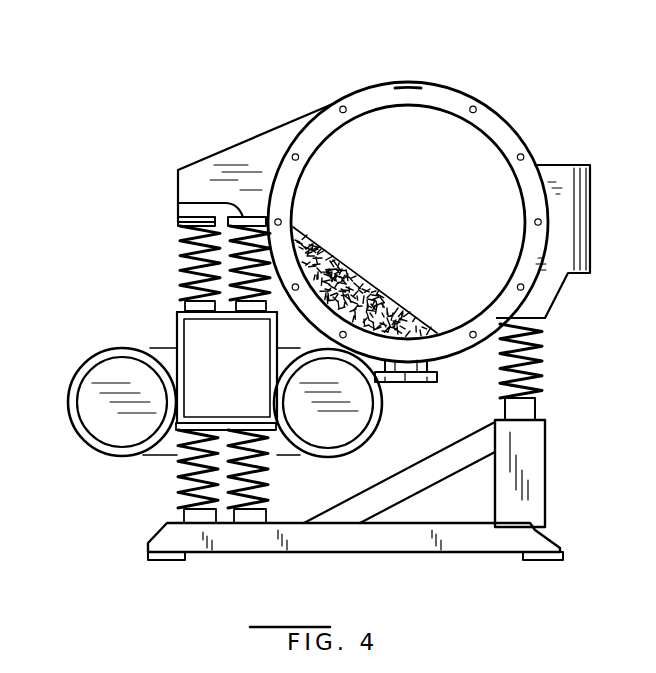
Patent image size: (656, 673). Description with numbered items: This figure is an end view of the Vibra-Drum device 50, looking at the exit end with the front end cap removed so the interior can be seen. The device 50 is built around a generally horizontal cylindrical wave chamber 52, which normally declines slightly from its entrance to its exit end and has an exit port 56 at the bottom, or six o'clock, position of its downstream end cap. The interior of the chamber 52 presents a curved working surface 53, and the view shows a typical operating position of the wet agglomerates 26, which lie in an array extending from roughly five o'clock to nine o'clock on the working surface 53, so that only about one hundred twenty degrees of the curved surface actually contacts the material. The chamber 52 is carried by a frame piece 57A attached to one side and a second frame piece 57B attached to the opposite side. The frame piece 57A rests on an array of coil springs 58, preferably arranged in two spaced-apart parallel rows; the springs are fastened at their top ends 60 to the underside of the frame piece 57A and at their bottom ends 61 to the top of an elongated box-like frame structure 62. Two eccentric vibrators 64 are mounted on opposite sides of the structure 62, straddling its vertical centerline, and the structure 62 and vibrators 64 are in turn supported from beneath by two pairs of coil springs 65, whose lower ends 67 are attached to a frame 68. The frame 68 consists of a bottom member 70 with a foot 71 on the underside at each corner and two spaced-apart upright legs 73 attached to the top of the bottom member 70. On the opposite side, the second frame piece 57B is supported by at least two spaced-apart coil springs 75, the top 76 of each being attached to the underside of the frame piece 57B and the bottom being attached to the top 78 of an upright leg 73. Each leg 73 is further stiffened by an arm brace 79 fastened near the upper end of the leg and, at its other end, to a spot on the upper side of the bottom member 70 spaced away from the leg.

The wet agglomerates 26 is at (370, 252).
The Vibra-Drum device 50 is at (232, 146).
The cylindrical wave chamber 52 is at (414, 101).
The working surface 53 is at (328, 235).
The exit port 56 is at (403, 398).
The frame piece 57A is at (200, 185).
The second frame piece 57B is at (548, 182).
The array of coil springs 58 is at (180, 293).
The top ends of coil springs 60 is at (232, 220).
The bottom ends of coil springs 61 is at (247, 313).
The box like frame structure 62 is at (240, 381).
The eccentric vibrators 64 is at (103, 428).
The pairs of coil springs 65 is at (188, 478).
The lower ends of coil springs 67 is at (240, 520).
The frame 68 is at (547, 507).
The bottom member 70 is at (457, 548).
The foot 71 is at (163, 558).
The upright legs 73 is at (528, 452).
The coil springs 75 is at (538, 372).
The top of coil spring 76 is at (532, 328).
The top of upright leg 78 is at (523, 413).
The arm braces 79 is at (424, 482).